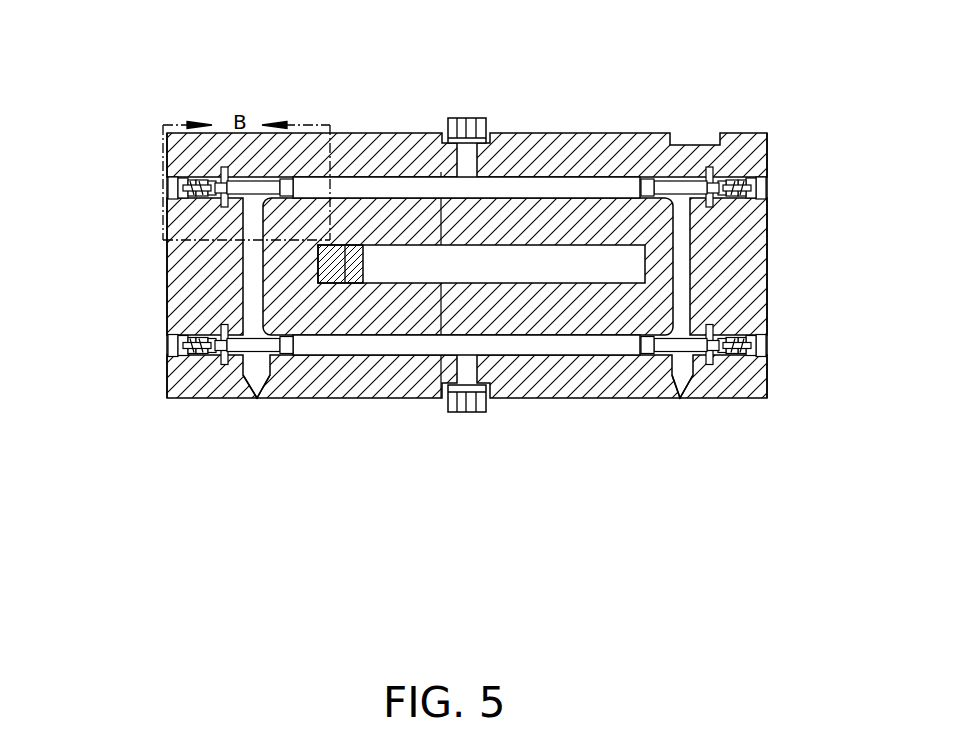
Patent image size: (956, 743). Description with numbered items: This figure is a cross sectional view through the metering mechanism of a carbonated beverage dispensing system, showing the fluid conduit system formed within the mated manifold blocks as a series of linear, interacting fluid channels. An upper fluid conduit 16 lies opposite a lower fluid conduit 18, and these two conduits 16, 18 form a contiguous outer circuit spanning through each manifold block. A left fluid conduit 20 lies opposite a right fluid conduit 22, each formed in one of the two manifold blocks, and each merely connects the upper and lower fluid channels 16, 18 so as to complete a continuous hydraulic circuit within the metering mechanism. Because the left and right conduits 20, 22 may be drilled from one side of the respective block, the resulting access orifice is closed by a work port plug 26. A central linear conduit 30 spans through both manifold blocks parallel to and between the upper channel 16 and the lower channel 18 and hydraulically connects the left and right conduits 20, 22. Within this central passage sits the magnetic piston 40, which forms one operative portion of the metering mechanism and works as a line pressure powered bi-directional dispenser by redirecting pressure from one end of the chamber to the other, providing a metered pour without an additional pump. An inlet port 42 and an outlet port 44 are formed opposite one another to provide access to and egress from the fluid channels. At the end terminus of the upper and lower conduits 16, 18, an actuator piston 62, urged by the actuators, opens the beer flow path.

The upper fluid conduit 16 is at (558, 190).
The lower fluid conduit 18 is at (553, 343).
The left fluid conduit 20 is at (248, 281).
The right fluid conduit 22 is at (683, 293).
The work port plug 26 is at (255, 397).
The central linear conduit 30 is at (610, 292).
The magnetic piston 40 is at (347, 293).
The inlet port 42 is at (458, 413).
The outlet port 44 is at (471, 118).
The actuator piston 62 is at (685, 195).